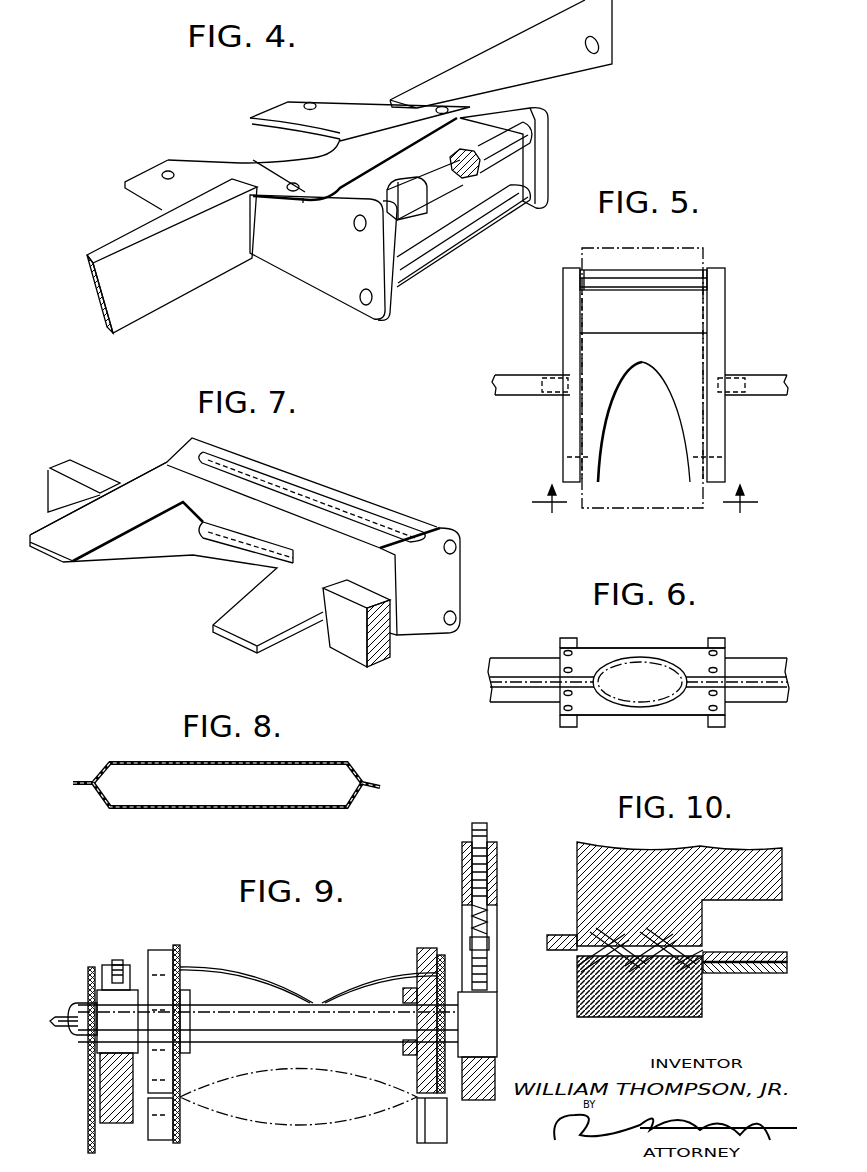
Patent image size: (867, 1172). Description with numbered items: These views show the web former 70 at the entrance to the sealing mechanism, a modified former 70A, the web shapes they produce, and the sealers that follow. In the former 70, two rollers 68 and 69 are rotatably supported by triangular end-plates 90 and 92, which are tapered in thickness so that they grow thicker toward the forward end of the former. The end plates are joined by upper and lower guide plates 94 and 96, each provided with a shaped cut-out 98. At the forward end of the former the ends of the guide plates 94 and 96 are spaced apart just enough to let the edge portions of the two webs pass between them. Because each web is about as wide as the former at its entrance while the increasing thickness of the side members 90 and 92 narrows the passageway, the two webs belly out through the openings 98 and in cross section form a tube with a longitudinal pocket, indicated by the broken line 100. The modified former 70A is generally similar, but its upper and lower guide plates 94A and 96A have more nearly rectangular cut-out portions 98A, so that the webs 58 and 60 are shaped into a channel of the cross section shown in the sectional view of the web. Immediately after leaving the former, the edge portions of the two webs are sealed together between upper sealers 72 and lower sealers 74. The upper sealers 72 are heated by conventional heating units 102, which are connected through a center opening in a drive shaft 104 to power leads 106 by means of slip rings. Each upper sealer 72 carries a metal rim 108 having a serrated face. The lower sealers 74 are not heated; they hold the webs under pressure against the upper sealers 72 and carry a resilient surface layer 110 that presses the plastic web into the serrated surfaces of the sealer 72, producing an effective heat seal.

In FIG. 4, the former 70 is at (347, 98).
In FIG. 5, the former 70 is at (555, 346).
In FIG. 6, the former 70 is at (730, 637).
In FIG. 7, the modified former 70A is at (352, 491).
In FIG. 4, the roller 68 is at (498, 128).
In FIG. 4, the roller 69 is at (485, 230).
In FIG. 4, the end-plate 90 is at (547, 152).
In FIG. 5, the end-plate 90 is at (563, 295).
In FIG. 4, the end-plate 92 is at (343, 302).
In FIG. 5, the end-plate 92 is at (727, 302).
In FIG. 4, the upper guide plate 94 is at (152, 170).
In FIG. 6, the upper guide plate 94 is at (692, 652).
In FIG. 7, the upper guide plate 94A is at (82, 537).
In FIG. 4, the lower guide plate 96 is at (157, 202).
In FIG. 6, the lower guide plate 96 is at (590, 712).
In FIG. 7, the lower guide plate 96A is at (295, 647).
In FIG. 4, the cut-out 98 is at (247, 157).
In FIG. 5, the cut-out 98 is at (680, 417).
In FIG. 7, the cut-out portion 98A is at (183, 503).
In FIG. 6, the broken line 100 is at (682, 685).
In FIG. 8, the web 58 is at (308, 765).
In FIG. 10, the web 58 is at (723, 953).
In FIG. 8, the web 60 is at (313, 807).
In FIG. 10, the web 60 is at (723, 977).
In FIG. 9, the upper sealer 72 is at (162, 948).
In FIG. 9, the lower sealer 74 is at (150, 1132).
In FIG. 9, the heating unit 102 is at (445, 963).
In FIG. 9, the drive shaft 104 is at (87, 1003).
In FIG. 9, the power leads 106 is at (77, 1030).
In FIG. 9, the metal rim 108 is at (177, 947).
In FIG. 10, the metal rim 108 is at (577, 885).
In FIG. 10, the resilient surface layer 110 is at (702, 1008).